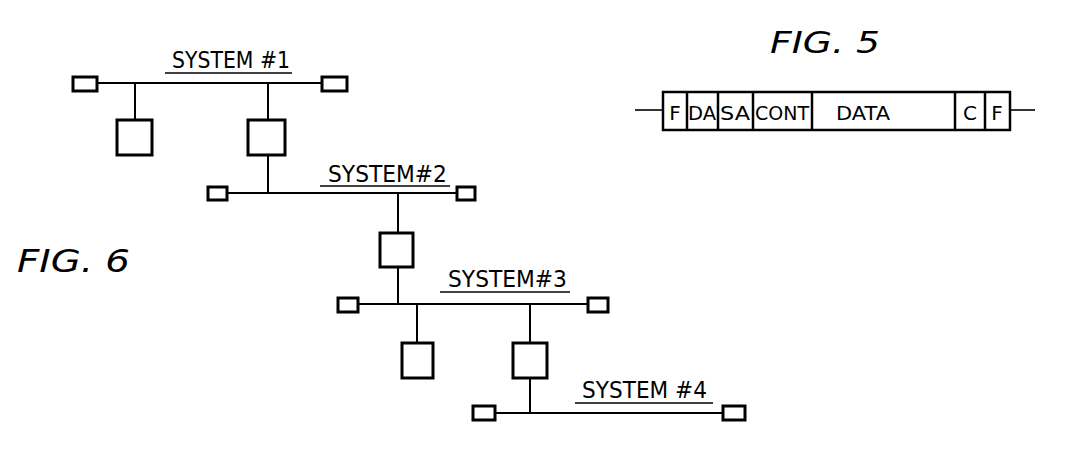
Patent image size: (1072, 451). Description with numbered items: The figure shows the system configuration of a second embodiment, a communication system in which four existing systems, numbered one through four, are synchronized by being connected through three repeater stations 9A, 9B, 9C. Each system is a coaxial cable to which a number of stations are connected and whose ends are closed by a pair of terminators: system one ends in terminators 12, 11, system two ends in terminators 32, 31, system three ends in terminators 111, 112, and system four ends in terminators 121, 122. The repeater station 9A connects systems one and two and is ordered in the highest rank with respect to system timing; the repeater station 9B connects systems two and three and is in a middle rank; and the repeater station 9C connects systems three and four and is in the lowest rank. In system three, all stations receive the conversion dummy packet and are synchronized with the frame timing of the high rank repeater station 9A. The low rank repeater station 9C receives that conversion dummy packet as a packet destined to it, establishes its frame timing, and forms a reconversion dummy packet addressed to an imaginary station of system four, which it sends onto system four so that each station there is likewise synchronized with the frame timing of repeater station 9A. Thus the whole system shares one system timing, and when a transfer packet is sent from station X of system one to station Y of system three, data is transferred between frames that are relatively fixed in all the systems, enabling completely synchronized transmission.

The terminator 12 is at (82, 77).
The terminator 11 is at (331, 77).
The station X is at (152, 137).
The repeater station 9A is at (285, 140).
The terminator 32 is at (218, 187).
The terminator 31 is at (464, 187).
The repeater station 9B is at (413, 250).
The terminator 112 is at (352, 298).
The terminator 111 is at (597, 298).
The station Y is at (433, 358).
The repeater station 9C is at (547, 360).
The terminator 121 is at (472, 414).
The terminator 122 is at (733, 406).